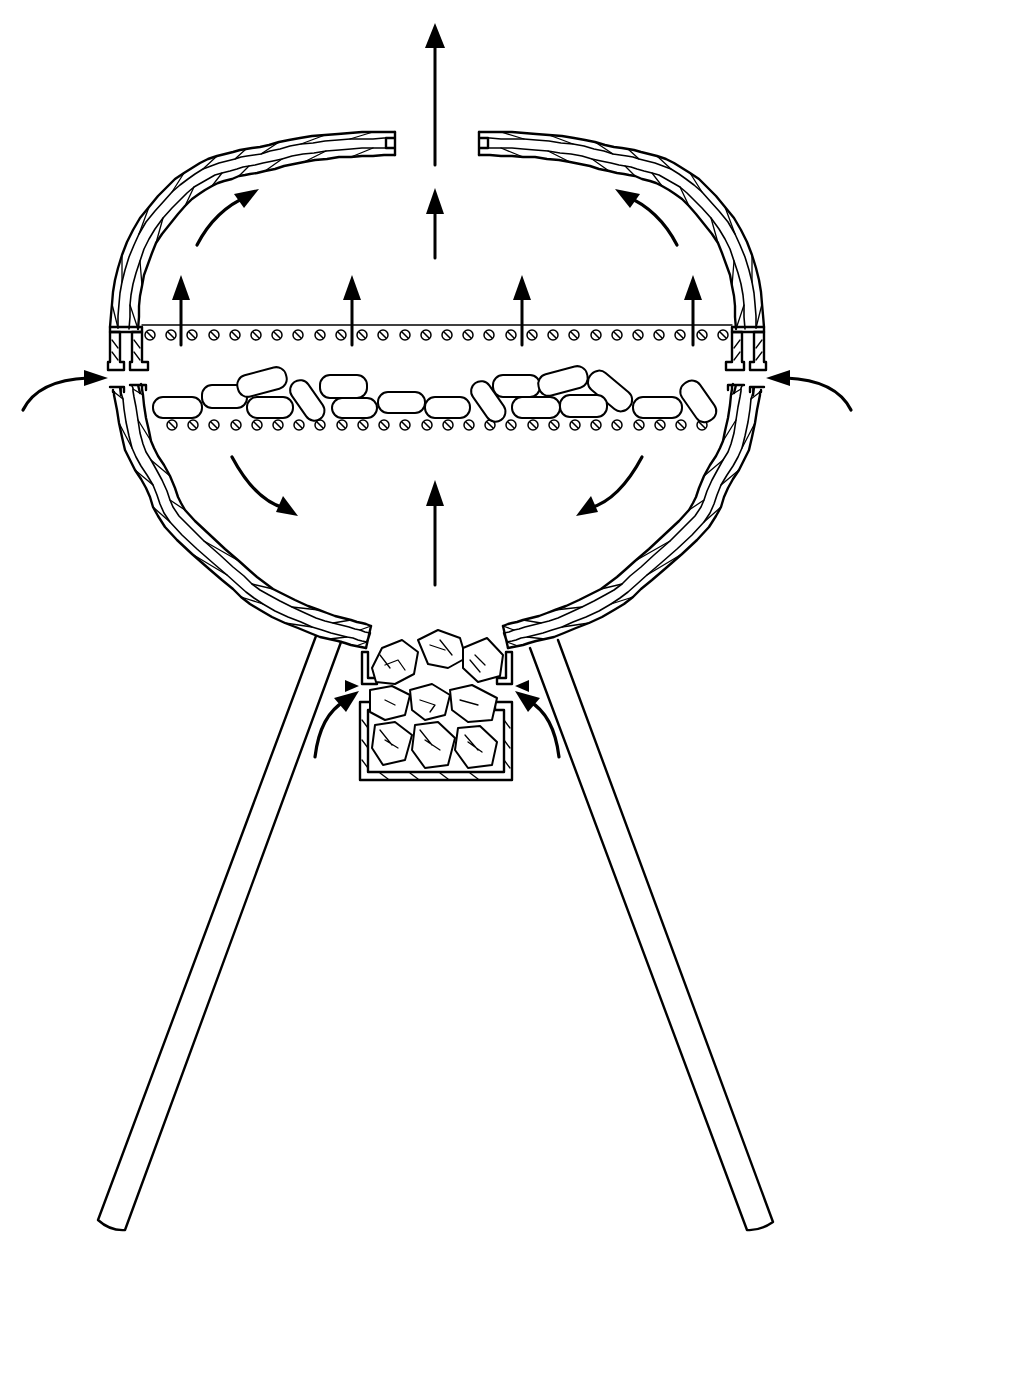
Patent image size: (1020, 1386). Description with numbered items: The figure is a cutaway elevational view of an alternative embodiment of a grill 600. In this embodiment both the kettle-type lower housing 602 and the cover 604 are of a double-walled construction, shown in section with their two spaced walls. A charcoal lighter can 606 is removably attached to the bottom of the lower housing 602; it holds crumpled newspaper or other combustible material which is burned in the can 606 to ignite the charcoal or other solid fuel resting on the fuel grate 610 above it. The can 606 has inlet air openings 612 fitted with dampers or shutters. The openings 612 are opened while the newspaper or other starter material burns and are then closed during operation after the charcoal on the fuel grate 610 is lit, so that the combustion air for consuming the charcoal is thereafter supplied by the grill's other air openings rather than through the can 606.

The grill 600 is at (718, 66).
The lower housing 602 is at (165, 528).
The cover 604 is at (257, 147).
The charcoal lighter can 606 is at (432, 782).
The fuel grate 610 is at (490, 432).
The inlet air openings 612 is at (348, 685).